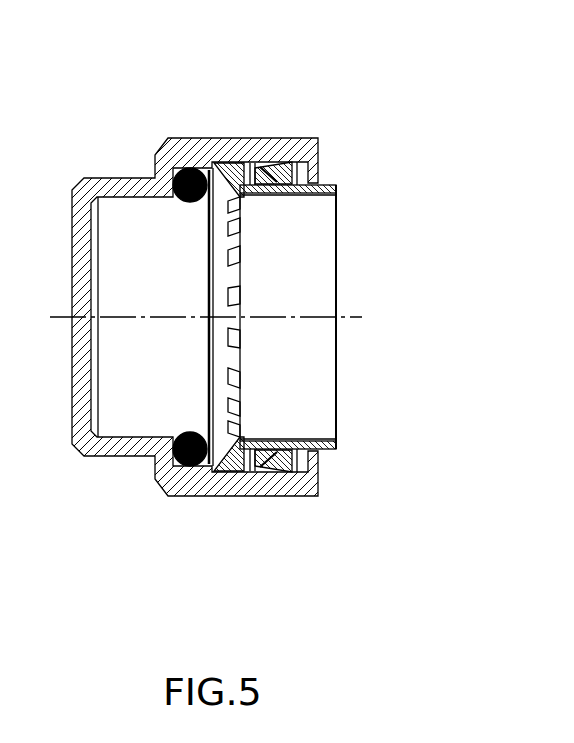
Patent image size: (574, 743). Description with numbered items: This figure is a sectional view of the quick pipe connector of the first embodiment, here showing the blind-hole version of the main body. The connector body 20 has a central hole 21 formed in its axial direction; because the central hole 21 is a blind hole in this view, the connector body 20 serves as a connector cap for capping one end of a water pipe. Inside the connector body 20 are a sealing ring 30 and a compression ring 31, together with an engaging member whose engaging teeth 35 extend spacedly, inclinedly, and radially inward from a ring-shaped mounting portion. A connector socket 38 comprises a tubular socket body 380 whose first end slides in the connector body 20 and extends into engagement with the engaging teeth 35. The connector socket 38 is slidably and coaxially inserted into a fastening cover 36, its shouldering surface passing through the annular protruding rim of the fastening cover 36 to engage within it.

The connector body 20 is at (250, 150).
The central hole 21 is at (143, 217).
The sealing ring 30 is at (189, 465).
The compression ring 31 is at (232, 463).
The engaging teeth 35 is at (232, 198).
The fastening cover 36 is at (283, 165).
The connector socket 38 is at (367, 229).
The socket body 380 is at (333, 185).